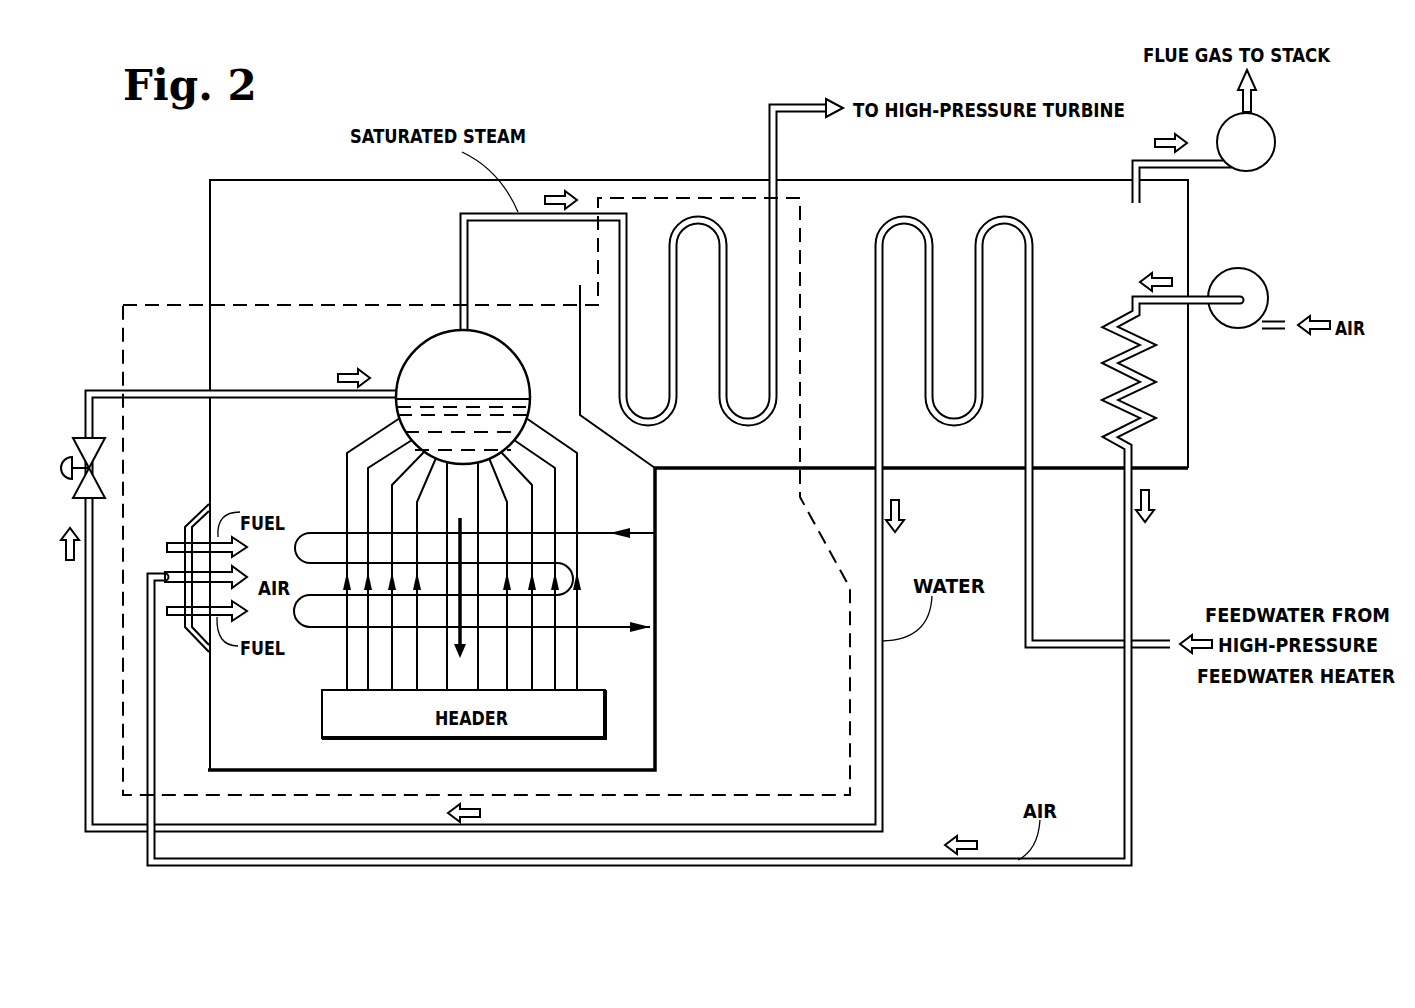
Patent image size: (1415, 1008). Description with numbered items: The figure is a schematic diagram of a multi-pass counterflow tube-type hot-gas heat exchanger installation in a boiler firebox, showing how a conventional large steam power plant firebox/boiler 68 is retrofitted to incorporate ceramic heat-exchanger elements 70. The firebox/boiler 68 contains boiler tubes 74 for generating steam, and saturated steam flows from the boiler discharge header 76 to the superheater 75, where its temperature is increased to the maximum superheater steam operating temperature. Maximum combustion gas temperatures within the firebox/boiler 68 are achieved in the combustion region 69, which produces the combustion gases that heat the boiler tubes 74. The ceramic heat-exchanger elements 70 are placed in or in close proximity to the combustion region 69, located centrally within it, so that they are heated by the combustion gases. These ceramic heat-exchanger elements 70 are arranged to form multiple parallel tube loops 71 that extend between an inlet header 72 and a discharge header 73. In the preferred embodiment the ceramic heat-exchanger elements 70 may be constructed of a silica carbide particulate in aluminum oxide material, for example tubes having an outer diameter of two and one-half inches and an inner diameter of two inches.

The firebox/boiler 68 is at (166, 305).
The combustion region 69 is at (202, 505).
The ceramic heat-exchanger elements 70 is at (517, 598).
The parallel tube loops 71 is at (302, 630).
The inlet header 72 is at (656, 533).
The discharge header 73 is at (656, 625).
The boiler tubes 74 is at (346, 487).
The superheater 75 is at (688, 215).
The boiler discharge header 76 is at (458, 326).